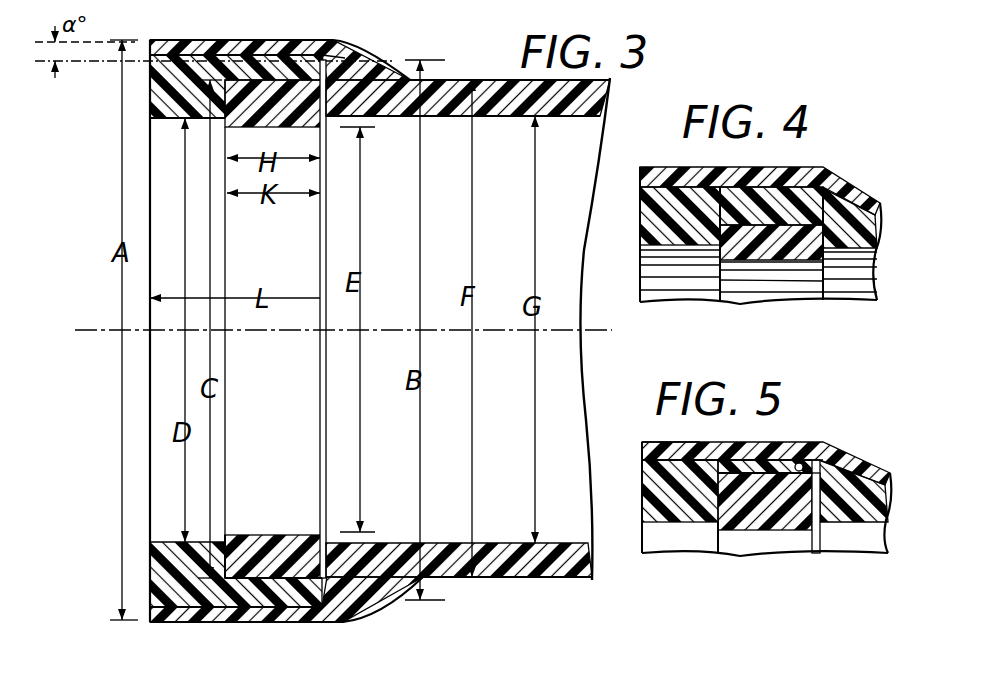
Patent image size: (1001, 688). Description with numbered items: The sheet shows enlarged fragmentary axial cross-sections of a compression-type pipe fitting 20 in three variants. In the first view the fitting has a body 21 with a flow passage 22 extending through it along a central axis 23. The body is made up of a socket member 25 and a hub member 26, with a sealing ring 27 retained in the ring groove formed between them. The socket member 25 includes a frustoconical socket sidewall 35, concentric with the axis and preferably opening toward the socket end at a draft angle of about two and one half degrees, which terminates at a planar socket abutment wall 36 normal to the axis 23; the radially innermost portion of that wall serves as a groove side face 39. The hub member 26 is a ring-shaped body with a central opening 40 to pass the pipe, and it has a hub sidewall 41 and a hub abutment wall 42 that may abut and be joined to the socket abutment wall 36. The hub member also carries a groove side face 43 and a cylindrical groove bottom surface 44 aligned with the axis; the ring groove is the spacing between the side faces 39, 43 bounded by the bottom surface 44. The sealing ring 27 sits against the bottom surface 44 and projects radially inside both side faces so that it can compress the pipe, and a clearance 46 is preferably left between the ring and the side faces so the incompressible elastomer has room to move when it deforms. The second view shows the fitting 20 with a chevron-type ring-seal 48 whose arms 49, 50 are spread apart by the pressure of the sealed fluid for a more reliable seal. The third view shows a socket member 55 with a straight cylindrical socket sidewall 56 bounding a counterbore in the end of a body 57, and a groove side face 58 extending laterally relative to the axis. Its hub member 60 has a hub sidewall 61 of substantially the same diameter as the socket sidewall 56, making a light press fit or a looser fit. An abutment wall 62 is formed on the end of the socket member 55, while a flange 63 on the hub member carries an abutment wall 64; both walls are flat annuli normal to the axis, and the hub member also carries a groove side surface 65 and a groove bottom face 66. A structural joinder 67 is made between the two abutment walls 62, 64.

In FIG. 3, the fitting 20 is at (447, 46).
In FIG. 4, the fitting 20 is at (818, 162).
In FIG. 3, the body 21 is at (460, 80).
In FIG. 3, the flow passage 22 is at (580, 116).
In FIG. 3, the central axis 23 is at (100, 330).
In FIG. 3, the socket member 25 is at (249, 654).
In FIG. 4, the socket member 25 is at (830, 192).
In FIG. 3, the hub member 26 is at (147, 158).
In FIG. 4, the hub member 26 is at (640, 214).
In FIG. 3, the sealing ring 27 is at (258, 533).
In FIG. 3, the socket sidewall 35 is at (298, 598).
In FIG. 3, the socket abutment wall 36 is at (330, 50).
In FIG. 3, the groove side face 39 is at (350, 540).
In FIG. 3, the central opening 40 is at (163, 118).
In FIG. 3, the hub sidewall 41 is at (232, 54).
In FIG. 3, the hub abutment wall 42 is at (342, 56).
In FIG. 3, the groove side face 43 is at (240, 574).
In FIG. 3, the groove bottom surface 44 is at (312, 576).
In FIG. 3, the clearance 46 is at (323, 125).
In FIG. 4, the chevron-type ring-seal 48 is at (763, 258).
In FIG. 4, the arm 49 is at (793, 192).
In FIG. 4, the arm 50 is at (848, 202).
In FIG. 5, the socket member 55 is at (820, 438).
In FIG. 5, the socket sidewall 56 is at (799, 462).
In FIG. 5, the body 57 is at (888, 472).
In FIG. 5, the groove side face 58 is at (820, 517).
In FIG. 5, the hub member 60 is at (640, 503).
In FIG. 5, the hub sidewall 61 is at (787, 460).
In FIG. 5, the abutment wall 62 is at (660, 452).
In FIG. 5, the flange 63 is at (642, 454).
In FIG. 5, the abutment wall 64 is at (667, 453).
In FIG. 5, the groove side surface 65 is at (733, 472).
In FIG. 5, the groove bottom face 66 is at (724, 480).
In FIG. 5, the structural joinder 67 is at (660, 448).